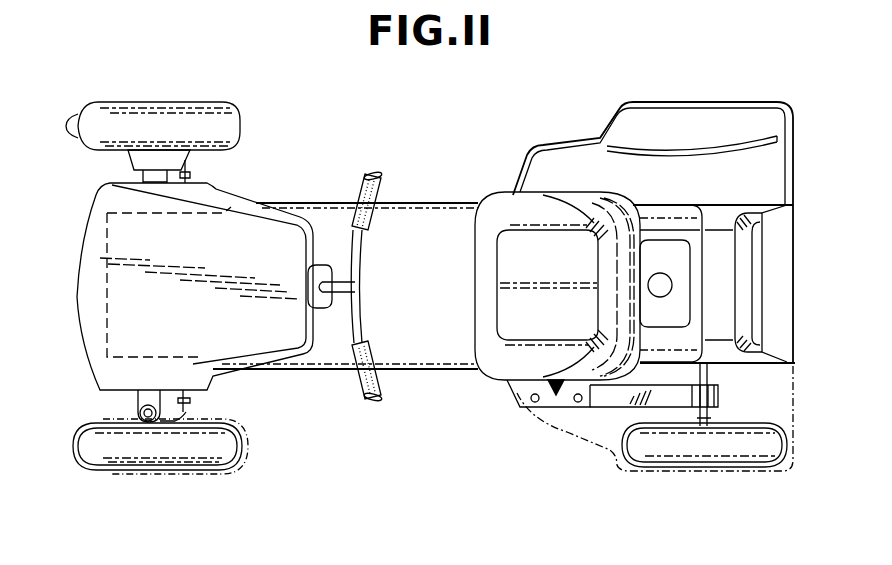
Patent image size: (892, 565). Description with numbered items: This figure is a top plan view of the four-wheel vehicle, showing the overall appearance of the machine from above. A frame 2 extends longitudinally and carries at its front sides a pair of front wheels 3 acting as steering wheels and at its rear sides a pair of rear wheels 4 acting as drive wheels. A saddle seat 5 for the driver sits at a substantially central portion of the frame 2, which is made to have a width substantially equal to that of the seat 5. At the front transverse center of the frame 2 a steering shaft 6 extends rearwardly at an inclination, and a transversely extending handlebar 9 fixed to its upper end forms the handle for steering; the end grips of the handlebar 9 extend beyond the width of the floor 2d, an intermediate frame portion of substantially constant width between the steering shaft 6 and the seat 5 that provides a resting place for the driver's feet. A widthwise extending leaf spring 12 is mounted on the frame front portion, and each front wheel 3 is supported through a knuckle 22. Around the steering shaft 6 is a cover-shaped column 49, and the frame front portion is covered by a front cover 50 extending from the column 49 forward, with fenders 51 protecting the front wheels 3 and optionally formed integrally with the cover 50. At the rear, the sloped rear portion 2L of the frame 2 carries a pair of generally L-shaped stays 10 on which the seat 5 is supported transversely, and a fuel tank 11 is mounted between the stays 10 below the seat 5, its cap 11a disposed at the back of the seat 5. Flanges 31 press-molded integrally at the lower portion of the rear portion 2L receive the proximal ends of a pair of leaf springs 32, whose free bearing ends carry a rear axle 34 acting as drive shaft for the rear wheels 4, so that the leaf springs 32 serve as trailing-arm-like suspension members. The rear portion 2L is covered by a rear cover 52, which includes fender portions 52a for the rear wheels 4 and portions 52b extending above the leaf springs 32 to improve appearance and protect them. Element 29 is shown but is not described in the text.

The frame 2 is at (446, 340).
The floor 2d is at (416, 222).
The sloped rear portion 2L is at (723, 310).
The front wheels 3 is at (76, 124).
The rear wheels 4 is at (681, 452).
The saddle seat 5 is at (513, 240).
The steering shaft 6 is at (345, 287).
The handlebar 9 is at (360, 248).
The L-shaped stays 10 is at (680, 230).
The fuel tank 11 is at (680, 290).
The cap 11a is at (668, 277).
The leaf spring 12 is at (138, 400).
The knuckle 22 is at (170, 421).
The tie rod joint 29 is at (190, 412).
The flanges 31 is at (543, 402).
The leaf springs 32 is at (613, 400).
The rear axle 34 is at (706, 420).
The column 49 is at (322, 265).
The front cover 50 is at (88, 322).
The fenders 51 is at (186, 112).
The rear cover 52 is at (557, 162).
The fender portions 52a is at (708, 125).
The portions extending above leaf springs 52b is at (637, 175).